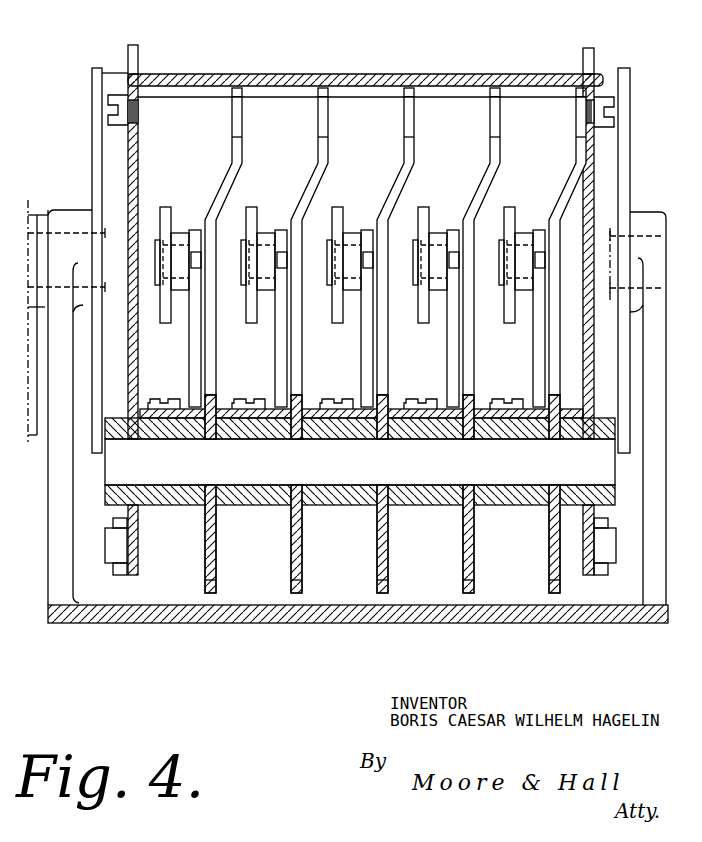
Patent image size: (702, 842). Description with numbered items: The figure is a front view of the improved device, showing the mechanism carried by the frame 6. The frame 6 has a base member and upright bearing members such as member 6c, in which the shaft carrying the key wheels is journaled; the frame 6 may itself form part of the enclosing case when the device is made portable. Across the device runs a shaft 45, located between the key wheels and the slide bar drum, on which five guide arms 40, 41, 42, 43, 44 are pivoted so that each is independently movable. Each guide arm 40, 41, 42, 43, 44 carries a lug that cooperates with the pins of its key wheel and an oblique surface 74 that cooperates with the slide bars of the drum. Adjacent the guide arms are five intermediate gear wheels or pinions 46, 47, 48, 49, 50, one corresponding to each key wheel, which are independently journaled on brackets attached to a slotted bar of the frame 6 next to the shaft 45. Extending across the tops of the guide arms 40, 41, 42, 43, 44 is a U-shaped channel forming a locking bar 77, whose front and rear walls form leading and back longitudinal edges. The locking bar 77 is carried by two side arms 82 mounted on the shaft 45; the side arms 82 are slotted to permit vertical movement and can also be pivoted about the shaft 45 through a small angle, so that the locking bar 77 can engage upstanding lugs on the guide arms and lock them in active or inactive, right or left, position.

The frame 6 is at (353, 623).
The upright bearing member 6c is at (660, 212).
The guide arm 40 is at (216, 545).
The guide arm 41 is at (302, 545).
The guide arm 42 is at (388, 545).
The guide arm 43 is at (474, 543).
The guide arm 44 is at (549, 543).
The shaft 45 is at (608, 471).
The intermediate gear wheel 46 is at (166, 207).
The intermediate gear wheel 47 is at (252, 207).
The intermediate gear wheel 48 is at (338, 207).
The intermediate gear wheel 49 is at (424, 207).
The intermediate gear wheel 50 is at (510, 207).
The oblique surface 74 is at (230, 192).
The locking bar 77 is at (357, 75).
The side arm 82 is at (138, 350).